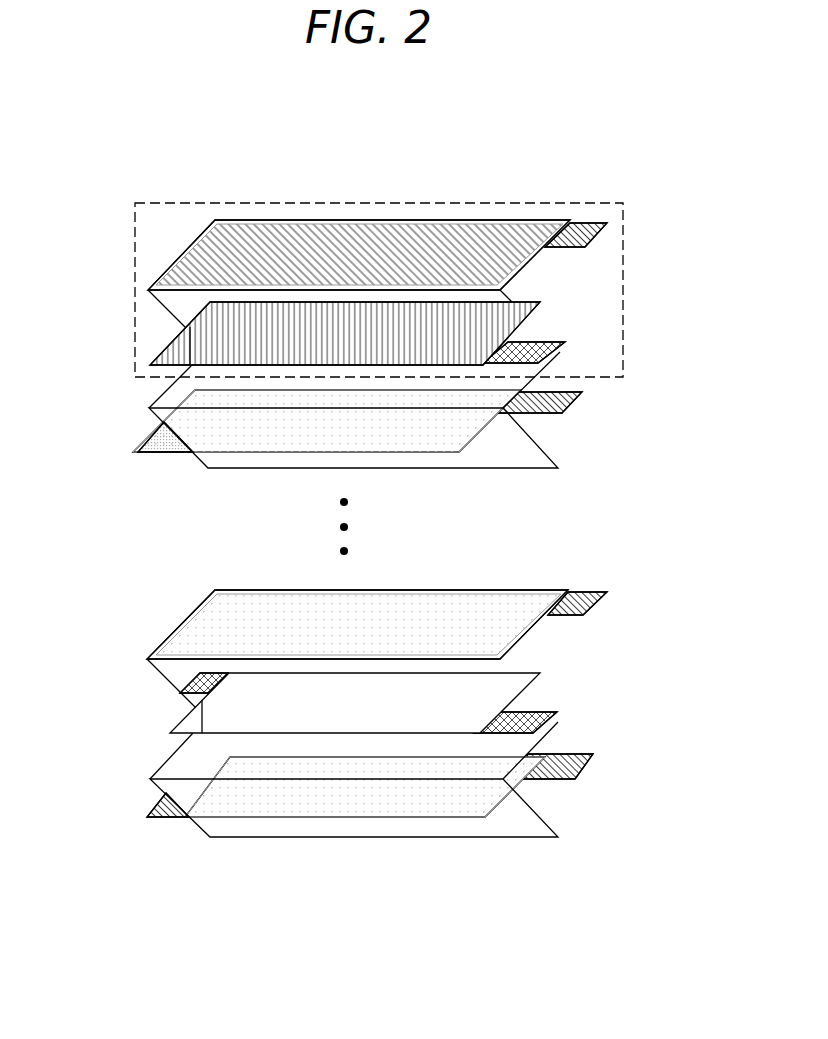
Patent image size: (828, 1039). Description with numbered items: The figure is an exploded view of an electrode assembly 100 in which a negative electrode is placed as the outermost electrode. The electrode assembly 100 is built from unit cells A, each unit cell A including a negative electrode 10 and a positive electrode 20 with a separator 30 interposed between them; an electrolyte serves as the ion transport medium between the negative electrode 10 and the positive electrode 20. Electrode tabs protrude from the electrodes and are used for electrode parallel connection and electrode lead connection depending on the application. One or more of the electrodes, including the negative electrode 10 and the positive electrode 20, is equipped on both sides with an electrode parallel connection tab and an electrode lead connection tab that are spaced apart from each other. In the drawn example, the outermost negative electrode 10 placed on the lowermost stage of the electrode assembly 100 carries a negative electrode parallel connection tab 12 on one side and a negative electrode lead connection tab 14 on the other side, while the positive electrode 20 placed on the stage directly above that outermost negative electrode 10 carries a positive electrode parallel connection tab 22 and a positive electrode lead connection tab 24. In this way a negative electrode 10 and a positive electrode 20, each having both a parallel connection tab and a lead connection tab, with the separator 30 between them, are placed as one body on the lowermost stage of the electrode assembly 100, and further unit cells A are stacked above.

The electrode assembly 100 is at (222, 143).
The negative electrode 10 is at (218, 806).
The negative electrode parallel connection tab 12 is at (572, 768).
The negative electrode lead connection tab 14 is at (175, 806).
The positive electrode 20 is at (192, 343).
The positive electrode parallel connection tab 22 is at (530, 723).
The positive electrode lead connection tab 24 is at (195, 690).
The separator 30 is at (175, 304).
The unit cell A is at (623, 291).